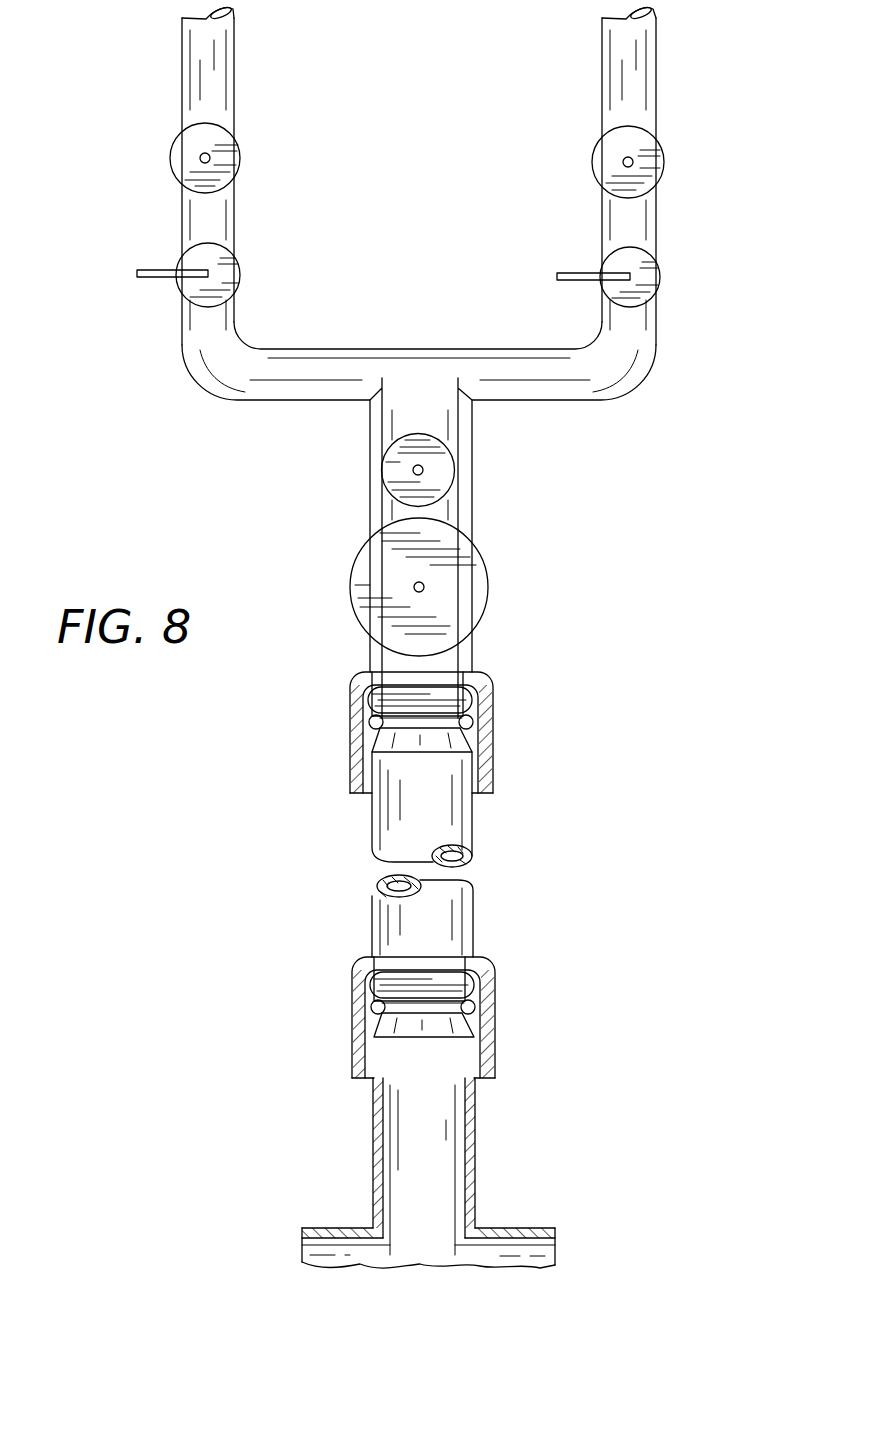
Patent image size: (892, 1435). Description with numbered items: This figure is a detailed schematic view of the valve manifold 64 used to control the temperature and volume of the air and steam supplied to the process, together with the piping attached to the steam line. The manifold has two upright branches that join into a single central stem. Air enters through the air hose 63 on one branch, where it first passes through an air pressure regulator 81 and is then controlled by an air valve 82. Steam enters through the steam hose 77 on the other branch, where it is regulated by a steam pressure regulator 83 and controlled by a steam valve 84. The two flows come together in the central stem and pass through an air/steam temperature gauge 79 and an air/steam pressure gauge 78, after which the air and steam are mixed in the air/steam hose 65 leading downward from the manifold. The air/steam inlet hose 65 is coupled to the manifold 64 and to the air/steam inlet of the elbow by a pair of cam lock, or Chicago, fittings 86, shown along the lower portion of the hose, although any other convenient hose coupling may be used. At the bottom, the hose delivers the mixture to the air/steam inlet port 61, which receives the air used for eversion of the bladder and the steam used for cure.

The air/steam inlet port 61 is at (373, 1145).
The air hose 63 is at (185, 92).
The valve manifold 64 is at (607, 430).
The air/steam hose 65 is at (474, 828).
The steam hose 77 is at (656, 79).
The air/steam pressure gauge 78 is at (468, 553).
The air/steam temperature gauge 79 is at (383, 482).
The air pressure regulator 81 is at (178, 172).
The air valve 82 is at (183, 260).
The steam pressure regulator 83 is at (663, 175).
The steam valve 84 is at (660, 264).
The cam lock fittings 86 is at (350, 785).